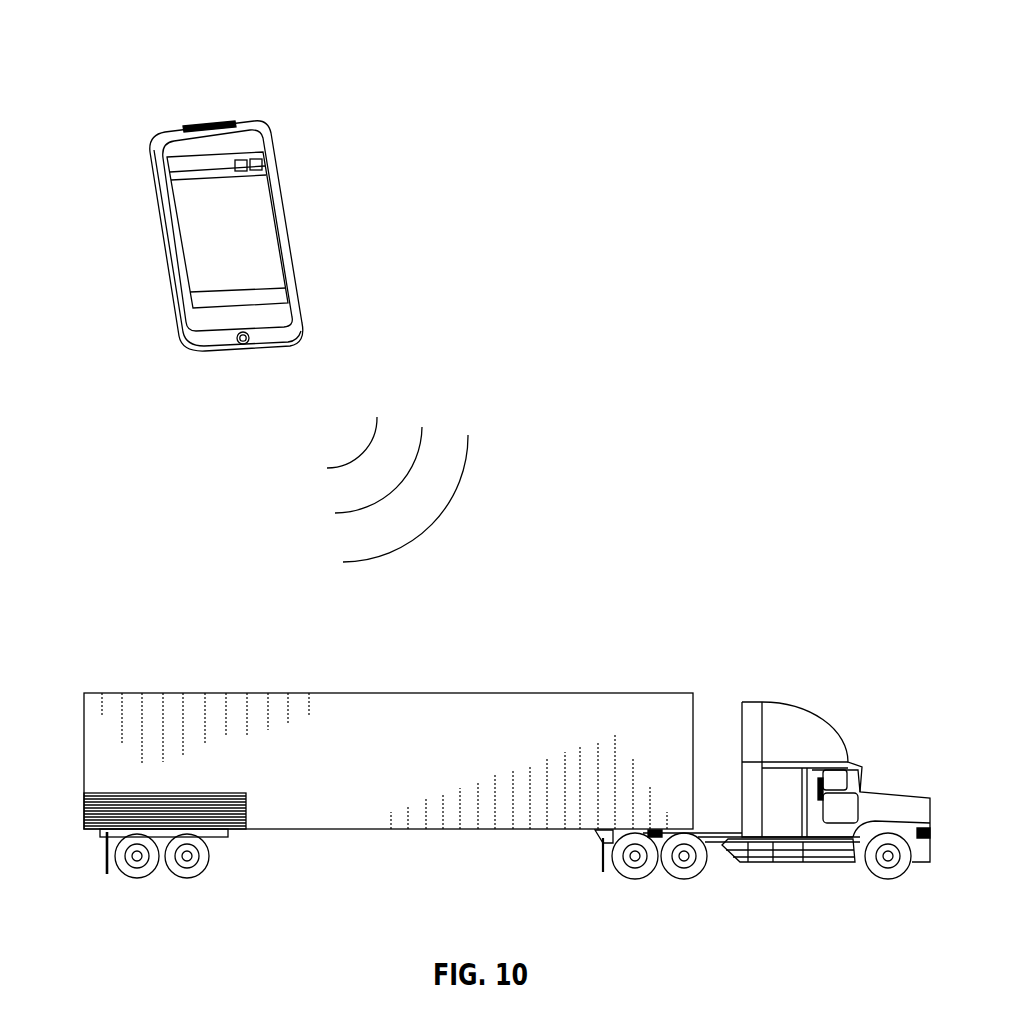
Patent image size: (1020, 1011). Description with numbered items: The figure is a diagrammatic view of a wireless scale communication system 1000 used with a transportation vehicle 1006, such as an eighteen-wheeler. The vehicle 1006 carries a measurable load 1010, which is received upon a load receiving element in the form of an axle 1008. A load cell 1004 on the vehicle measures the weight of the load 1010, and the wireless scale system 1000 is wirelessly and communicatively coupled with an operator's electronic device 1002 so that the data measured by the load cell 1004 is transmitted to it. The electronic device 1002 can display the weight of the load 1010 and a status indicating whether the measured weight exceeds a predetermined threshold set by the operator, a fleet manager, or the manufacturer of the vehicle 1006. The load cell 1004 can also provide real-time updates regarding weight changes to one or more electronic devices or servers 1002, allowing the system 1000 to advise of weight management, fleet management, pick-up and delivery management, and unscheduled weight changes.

The wireless scale communication system 1000 is at (722, 49).
The electronic device 1002 is at (258, 127).
The load cell 1004 is at (112, 838).
The transportation vehicle 1006 is at (810, 720).
The axle 1008 is at (175, 862).
The measurable load 1010 is at (86, 798).